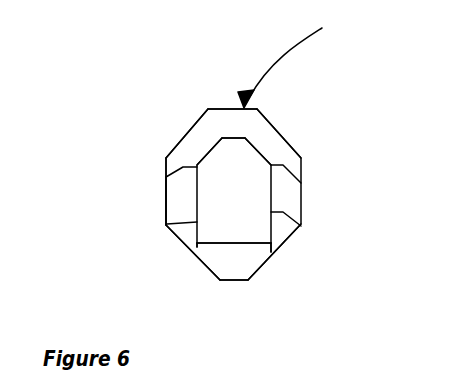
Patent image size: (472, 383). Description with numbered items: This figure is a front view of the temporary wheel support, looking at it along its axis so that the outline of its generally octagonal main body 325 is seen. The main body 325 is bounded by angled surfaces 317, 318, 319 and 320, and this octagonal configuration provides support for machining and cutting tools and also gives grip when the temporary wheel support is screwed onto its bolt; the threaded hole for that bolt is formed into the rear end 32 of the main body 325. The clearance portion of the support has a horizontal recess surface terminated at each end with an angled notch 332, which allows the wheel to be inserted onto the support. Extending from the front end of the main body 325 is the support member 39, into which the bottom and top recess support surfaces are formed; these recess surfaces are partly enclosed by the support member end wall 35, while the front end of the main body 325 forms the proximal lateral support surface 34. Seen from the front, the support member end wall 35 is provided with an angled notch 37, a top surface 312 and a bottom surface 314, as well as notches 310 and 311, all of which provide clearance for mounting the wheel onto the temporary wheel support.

The rear end 32 is at (278, 136).
The angled surface 320 is at (218, 108).
The main body 325 is at (307, 56).
The support member end wall 35 is at (240, 184).
The notch 311 is at (205, 151).
The top surface 312 is at (255, 147).
The angled surface 317 is at (175, 148).
The angled surface 318 is at (166, 178).
The angled notch 332 is at (166, 170).
The proximal lateral support surface 34 is at (180, 197).
The support member 39 is at (301, 226).
The angled surface 319 is at (198, 250).
The angled notch 37 is at (239, 260).
The notch 310 is at (203, 266).
The bottom surface 314 is at (237, 280).